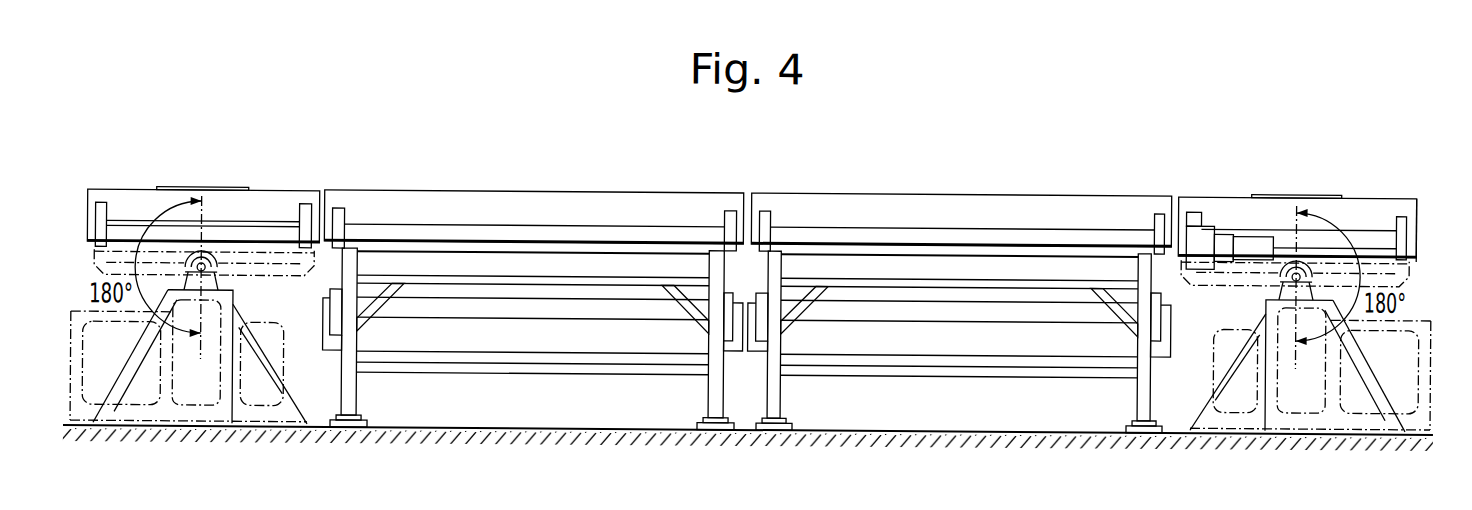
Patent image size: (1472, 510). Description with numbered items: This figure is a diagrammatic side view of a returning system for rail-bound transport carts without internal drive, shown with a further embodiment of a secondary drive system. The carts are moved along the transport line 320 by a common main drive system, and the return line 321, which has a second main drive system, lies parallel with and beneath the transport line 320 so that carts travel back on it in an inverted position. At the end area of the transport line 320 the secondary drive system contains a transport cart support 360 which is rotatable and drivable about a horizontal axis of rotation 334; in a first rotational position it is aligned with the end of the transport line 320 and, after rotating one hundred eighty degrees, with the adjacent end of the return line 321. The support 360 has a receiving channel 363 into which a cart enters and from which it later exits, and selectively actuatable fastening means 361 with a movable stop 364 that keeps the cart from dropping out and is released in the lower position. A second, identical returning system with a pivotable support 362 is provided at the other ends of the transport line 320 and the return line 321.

The transport line 320 is at (473, 214).
The return line 321 is at (575, 323).
The horizontal axis of rotation 334 is at (1280, 280).
The transport cart support 360 is at (1298, 203).
The fastening means 361 is at (1402, 203).
The pivotable support 362 is at (136, 180).
The receiving channel 363 is at (1237, 204).
The movable stop 364 is at (1415, 252).